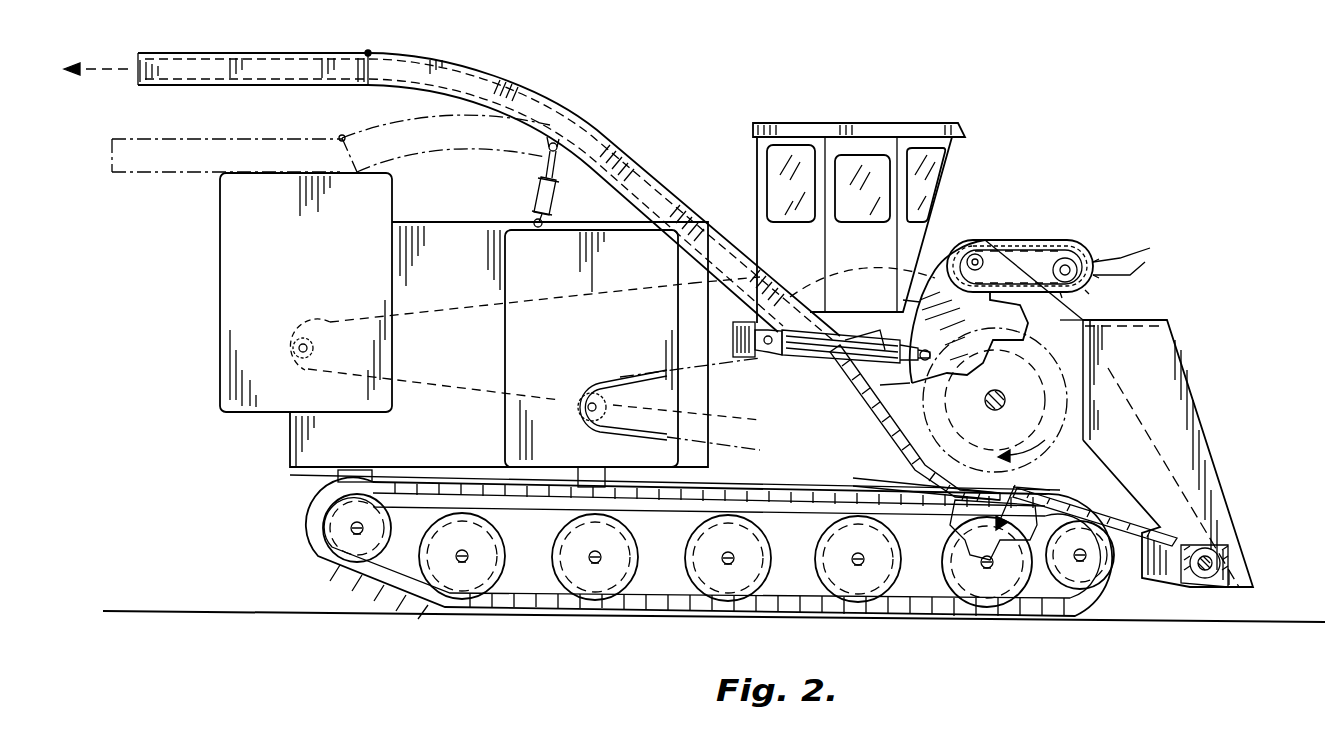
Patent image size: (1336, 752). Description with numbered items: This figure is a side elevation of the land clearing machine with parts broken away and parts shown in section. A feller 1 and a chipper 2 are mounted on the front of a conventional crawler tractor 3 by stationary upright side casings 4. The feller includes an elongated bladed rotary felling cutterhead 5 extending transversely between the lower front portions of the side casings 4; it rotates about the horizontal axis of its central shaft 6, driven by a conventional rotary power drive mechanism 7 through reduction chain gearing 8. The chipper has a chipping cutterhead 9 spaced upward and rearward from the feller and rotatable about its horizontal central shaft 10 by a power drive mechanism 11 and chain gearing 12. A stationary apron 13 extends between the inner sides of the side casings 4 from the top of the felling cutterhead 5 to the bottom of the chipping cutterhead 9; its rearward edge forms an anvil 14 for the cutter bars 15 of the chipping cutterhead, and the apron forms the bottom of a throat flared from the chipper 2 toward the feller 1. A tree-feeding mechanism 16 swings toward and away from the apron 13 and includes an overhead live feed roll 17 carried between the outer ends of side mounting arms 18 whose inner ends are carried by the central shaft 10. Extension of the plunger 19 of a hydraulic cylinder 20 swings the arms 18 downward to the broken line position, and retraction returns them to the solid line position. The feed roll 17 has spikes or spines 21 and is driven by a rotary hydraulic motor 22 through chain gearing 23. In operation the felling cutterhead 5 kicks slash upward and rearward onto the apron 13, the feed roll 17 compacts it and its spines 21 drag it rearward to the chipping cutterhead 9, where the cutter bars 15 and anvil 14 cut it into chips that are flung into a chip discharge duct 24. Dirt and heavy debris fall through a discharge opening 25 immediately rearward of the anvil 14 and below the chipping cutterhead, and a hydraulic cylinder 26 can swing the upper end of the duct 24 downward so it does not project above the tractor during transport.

The feller 1 is at (1252, 553).
The chipper 2 is at (1075, 372).
The crawler tractor 3 is at (875, 123).
The side casings 4 is at (1200, 425).
The felling cutterhead 5 is at (1215, 583).
The central shaft 6 is at (1192, 583).
The rotary power drive mechanism 7 is at (310, 254).
The reduction chain gearing 8 is at (330, 326).
The chipping cutterhead 9 is at (920, 462).
The central shaft 10 is at (1090, 410).
The power drive mechanism 11 is at (596, 330).
The chain gearing 12 is at (608, 382).
The apron 13 is at (1178, 528).
The anvil 14 is at (1043, 483).
The cutter bars 15 is at (935, 440).
The tree-feeding mechanism 16 is at (1093, 248).
The live feed roll 17 is at (1068, 252).
The side mounting arms 18 is at (947, 255).
The plunger 19 is at (900, 302).
The hydraulic cylinder 20 is at (806, 362).
The spikes or spines 21 is at (1145, 253).
The rotary hydraulic motor 22 is at (998, 248).
The chain gearing 23 is at (1030, 262).
The chip discharge duct 24 is at (336, 38).
The discharge opening 25 is at (993, 528).
The hydraulic cylinder 26 is at (538, 194).